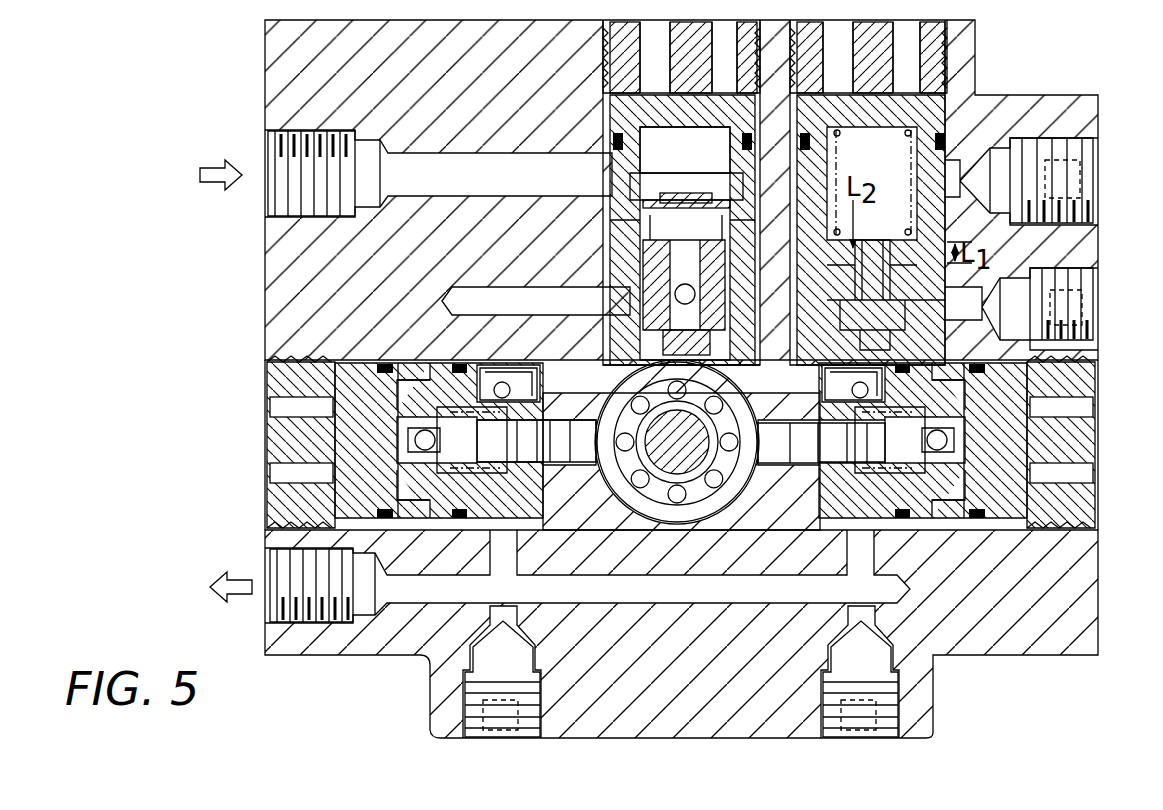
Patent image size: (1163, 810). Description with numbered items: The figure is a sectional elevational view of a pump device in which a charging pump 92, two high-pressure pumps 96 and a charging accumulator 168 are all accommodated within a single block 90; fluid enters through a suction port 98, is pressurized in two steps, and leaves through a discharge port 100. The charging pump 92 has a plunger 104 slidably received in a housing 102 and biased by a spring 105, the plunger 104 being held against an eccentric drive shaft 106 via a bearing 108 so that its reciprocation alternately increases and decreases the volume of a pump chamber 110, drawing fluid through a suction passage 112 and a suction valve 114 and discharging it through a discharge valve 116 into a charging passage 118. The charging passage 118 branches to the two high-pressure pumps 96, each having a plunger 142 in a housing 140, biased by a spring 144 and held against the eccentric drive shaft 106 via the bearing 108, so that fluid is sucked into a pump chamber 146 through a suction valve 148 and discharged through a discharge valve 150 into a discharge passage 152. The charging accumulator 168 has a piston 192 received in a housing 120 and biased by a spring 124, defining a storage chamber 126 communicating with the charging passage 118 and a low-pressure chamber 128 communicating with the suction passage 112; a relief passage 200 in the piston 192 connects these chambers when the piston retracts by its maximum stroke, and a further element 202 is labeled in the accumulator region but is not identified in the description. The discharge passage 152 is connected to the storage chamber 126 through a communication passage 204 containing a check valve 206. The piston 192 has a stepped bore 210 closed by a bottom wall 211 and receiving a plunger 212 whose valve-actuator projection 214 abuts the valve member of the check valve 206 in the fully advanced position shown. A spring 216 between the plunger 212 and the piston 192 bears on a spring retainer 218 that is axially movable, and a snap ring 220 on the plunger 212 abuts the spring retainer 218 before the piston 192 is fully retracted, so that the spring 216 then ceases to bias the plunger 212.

The block 90 is at (278, 82).
The charging pump 92 is at (603, 245).
The high-pressure pumps 96 is at (381, 341).
The suction port 98 is at (284, 152).
The discharge port 100 is at (272, 606).
The housing 102 is at (612, 268).
The plunger 104 is at (614, 350).
The spring 105 is at (618, 230).
The eccentric drive shaft 106 is at (670, 465).
The bearing 108 is at (713, 500).
The pump chamber 110 is at (690, 231).
The suction passage 112 is at (437, 165).
The suction valve 114 is at (636, 190).
The discharge valve 116 is at (718, 287).
The charging passage 118 is at (500, 302).
The housing 120 is at (803, 225).
The spring 124 is at (948, 134).
The storage chamber 126 is at (902, 276).
The low-pressure chamber 128 is at (895, 167).
The housing 140 is at (523, 505).
The plunger 142 is at (588, 452).
The spring 144 is at (450, 474).
The pump chamber 146 is at (497, 468).
The suction valve 148 is at (426, 400).
The discharge valve 150 is at (516, 354).
The discharge passage 152 is at (623, 593).
The charging accumulator 168 is at (985, 113).
The piston 192 is at (965, 315).
The relief passage 200 is at (1060, 270).
The bore 202 is at (880, 205).
The communication passage 204 is at (847, 363).
The check valve 206 is at (845, 349).
The stepped bore 210 is at (938, 322).
The bottom wall 211 is at (1000, 174).
The plunger 212 is at (836, 298).
The valve-actuator projection 214 is at (818, 333).
The spring 216 is at (832, 265).
The spring retainer 218 is at (930, 300).
The snap ring 220 is at (940, 262).